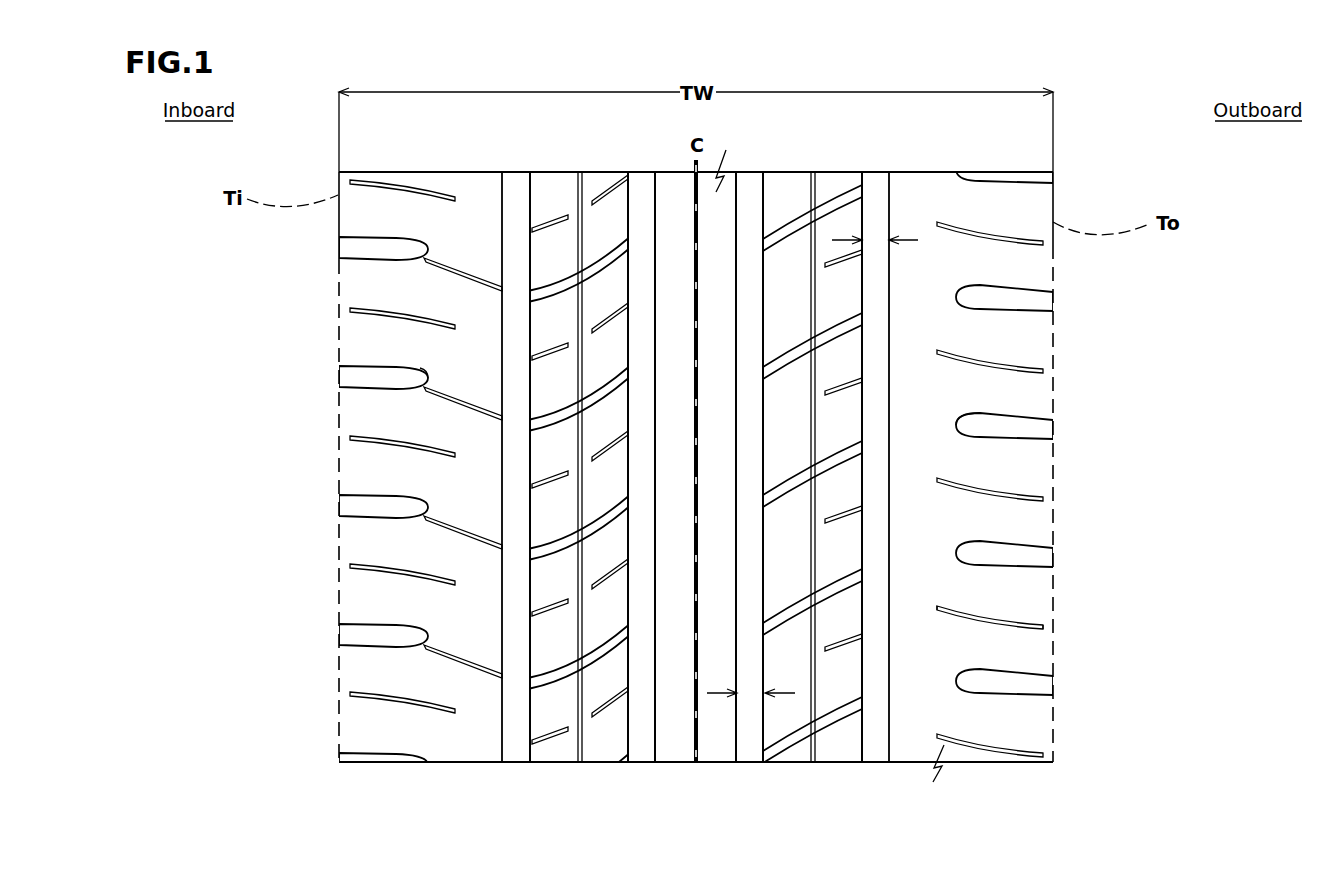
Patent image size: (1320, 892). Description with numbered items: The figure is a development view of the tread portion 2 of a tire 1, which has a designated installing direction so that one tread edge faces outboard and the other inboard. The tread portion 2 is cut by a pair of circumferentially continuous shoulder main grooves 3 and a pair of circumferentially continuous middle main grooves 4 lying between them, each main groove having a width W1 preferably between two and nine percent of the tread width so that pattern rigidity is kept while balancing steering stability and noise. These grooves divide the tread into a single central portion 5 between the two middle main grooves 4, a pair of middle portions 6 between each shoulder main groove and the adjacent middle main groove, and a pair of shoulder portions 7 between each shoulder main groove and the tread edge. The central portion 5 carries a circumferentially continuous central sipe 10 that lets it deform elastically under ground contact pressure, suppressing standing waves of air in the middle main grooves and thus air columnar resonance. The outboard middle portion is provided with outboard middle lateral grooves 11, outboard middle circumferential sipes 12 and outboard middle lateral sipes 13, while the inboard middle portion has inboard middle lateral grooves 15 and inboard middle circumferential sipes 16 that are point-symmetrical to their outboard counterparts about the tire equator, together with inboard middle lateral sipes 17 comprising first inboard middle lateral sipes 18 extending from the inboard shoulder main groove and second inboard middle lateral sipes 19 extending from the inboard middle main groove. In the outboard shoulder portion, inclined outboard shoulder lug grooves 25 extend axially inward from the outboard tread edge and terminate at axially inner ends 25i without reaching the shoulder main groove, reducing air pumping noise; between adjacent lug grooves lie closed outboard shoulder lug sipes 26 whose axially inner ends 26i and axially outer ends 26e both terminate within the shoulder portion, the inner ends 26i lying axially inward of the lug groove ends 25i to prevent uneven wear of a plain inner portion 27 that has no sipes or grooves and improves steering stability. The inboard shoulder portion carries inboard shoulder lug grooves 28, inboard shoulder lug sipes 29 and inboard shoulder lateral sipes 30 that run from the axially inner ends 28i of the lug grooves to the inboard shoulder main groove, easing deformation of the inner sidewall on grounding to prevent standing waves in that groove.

The tire 1 is at (1155, 157).
The tread portion 2 is at (1084, 186).
The shoulder main grooves 3 is at (516, 195).
The middle main grooves 4 is at (643, 193).
The central portion 5 is at (676, 195).
The middle portions 6 is at (559, 197).
The shoulder portions 7 is at (400, 202).
The central sipe 10 is at (693, 683).
The outboard middle lateral grooves 11 is at (790, 740).
The outboard middle circumferential sipes 12 is at (813, 687).
The outboard middle lateral sipes 13 is at (842, 643).
The inboard middle lateral grooves 15 is at (550, 677).
The inboard middle circumferential sipes 16 is at (578, 718).
The inboard middle lateral sipes 17 is at (525, 511).
The first inboard middle lateral sipe 18 is at (543, 613).
The second inboard middle lateral sipe 19 is at (610, 583).
The outboard shoulder lug grooves 25 is at (1015, 427).
The axially inner ends of the outboard shoulder lug grooves 25i is at (966, 414).
The outboard shoulder lug sipes 26 is at (1010, 367).
The axially inner ends of the outboard shoulder lug sipes 26i is at (936, 604).
The axially outer ends of the outboard shoulder lug sipes 26e is at (1043, 627).
The inner portion 27 is at (919, 728).
The inboard shoulder lug grooves 28 is at (375, 378).
The axially inner ends of the inboard shoulder lug grooves 28i is at (427, 392).
The inboard shoulder lug sipes 29 is at (400, 437).
The inboard shoulder lateral sipes 30 is at (453, 403).
The widths of the main grooves W1 is at (877, 238).